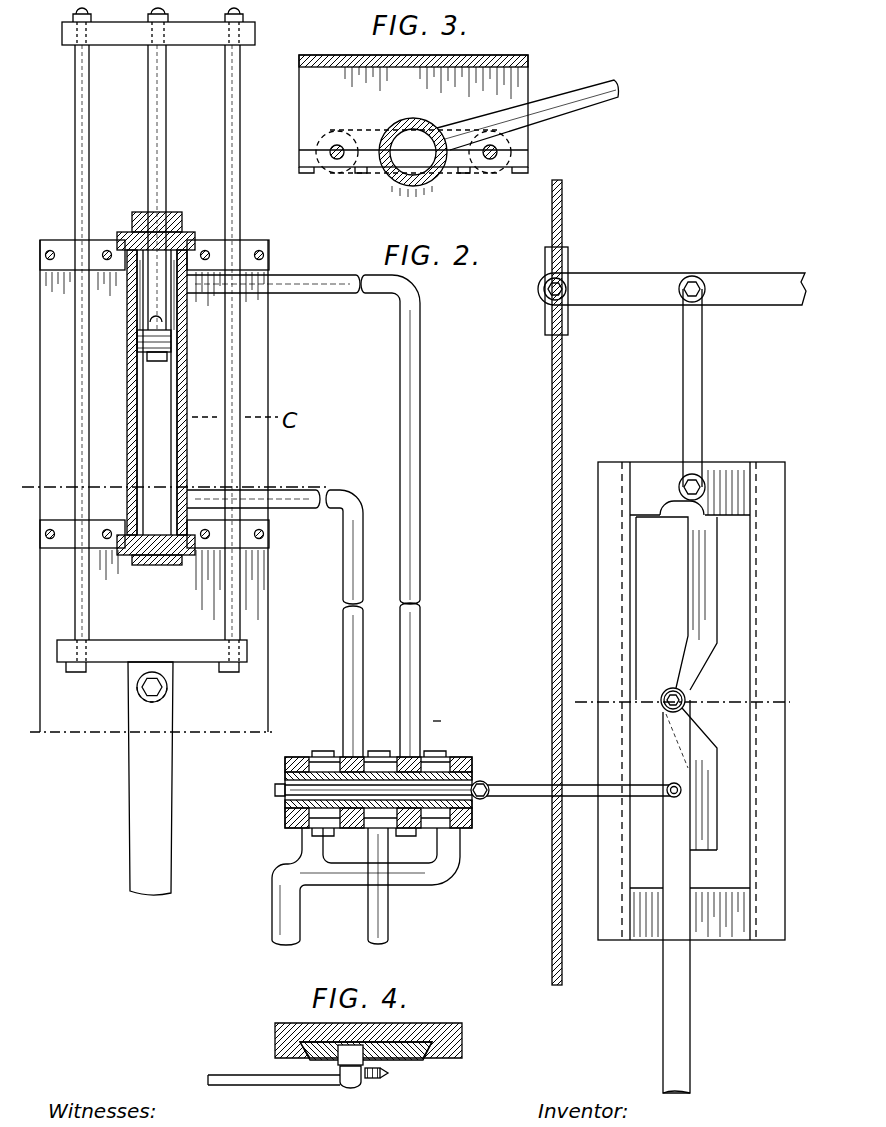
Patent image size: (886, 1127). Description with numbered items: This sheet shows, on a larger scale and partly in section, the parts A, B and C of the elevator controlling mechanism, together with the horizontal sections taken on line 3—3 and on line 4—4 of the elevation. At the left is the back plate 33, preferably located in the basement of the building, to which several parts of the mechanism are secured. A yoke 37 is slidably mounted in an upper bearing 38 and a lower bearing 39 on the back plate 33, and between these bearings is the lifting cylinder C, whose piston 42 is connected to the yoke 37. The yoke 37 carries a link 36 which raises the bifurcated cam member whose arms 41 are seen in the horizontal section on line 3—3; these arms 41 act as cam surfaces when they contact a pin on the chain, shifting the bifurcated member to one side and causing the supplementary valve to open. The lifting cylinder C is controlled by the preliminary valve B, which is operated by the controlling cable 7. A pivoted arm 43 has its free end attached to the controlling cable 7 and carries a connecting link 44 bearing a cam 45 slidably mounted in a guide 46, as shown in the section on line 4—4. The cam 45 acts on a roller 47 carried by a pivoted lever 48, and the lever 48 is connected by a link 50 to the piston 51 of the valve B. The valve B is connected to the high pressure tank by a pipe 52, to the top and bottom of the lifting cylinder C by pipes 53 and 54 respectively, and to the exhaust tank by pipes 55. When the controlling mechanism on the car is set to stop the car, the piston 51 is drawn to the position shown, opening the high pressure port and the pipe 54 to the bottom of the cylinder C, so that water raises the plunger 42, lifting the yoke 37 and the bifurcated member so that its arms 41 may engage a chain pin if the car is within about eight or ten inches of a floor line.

In FIG. 2, the section line 3— 3 is at (357, 488).
In FIG. 2, the section line 4— 4 is at (679, 703).
In FIG. 2, the controlling cable 7 is at (562, 397).
In FIG. 2, the back plate 33 is at (40, 420).
In FIG. 3, the back plate 33 is at (318, 67).
In FIG. 2, the link 36 is at (143, 775).
In FIG. 2, the yoke 37 is at (89, 128).
In FIG. 3, the yoke 37 is at (335, 173).
In FIG. 2, the bearing 38 is at (61, 244).
In FIG. 2, the bearing 39 is at (56, 548).
In FIG. 3, the arms of the bifurcated member 41 is at (394, 180).
In FIG. 2, the piston 42 is at (167, 147).
In FIG. 2, the pivoted arm 43 is at (633, 273).
In FIG. 2, the connecting link 44 is at (702, 399).
In FIG. 2, the cam 45 is at (676, 600).
In FIG. 4, the cam 45 is at (410, 1058).
In FIG. 2, the guide 46 is at (604, 578).
In FIG. 4, the guide 46 is at (462, 1032).
In FIG. 2, the roller 47 is at (665, 684).
In FIG. 2, the pivoted lever 48 is at (683, 975).
In FIG. 4, the pivoted lever 48 is at (377, 1082).
In FIG. 2, the link 50 is at (520, 790).
In FIG. 4, the link 50 is at (295, 1080).
In FIG. 2, the piston of valve B 51 is at (474, 808).
In FIG. 2, the pipe 52 is at (389, 932).
In FIG. 2, the pipe 53 is at (315, 277).
In FIG. 2, the pipe 54 is at (346, 633).
In FIG. 3, the pipe 54 is at (563, 101).
In FIG. 2, the pipes 55 is at (441, 868).